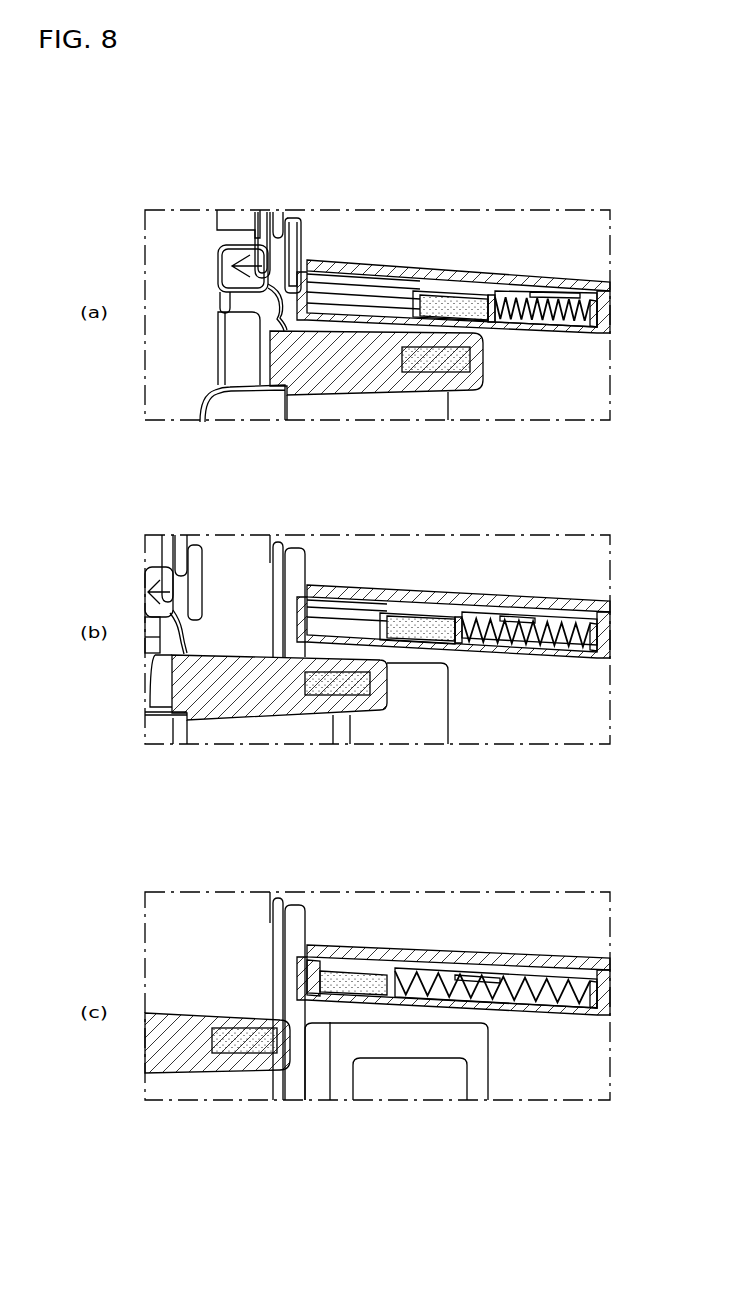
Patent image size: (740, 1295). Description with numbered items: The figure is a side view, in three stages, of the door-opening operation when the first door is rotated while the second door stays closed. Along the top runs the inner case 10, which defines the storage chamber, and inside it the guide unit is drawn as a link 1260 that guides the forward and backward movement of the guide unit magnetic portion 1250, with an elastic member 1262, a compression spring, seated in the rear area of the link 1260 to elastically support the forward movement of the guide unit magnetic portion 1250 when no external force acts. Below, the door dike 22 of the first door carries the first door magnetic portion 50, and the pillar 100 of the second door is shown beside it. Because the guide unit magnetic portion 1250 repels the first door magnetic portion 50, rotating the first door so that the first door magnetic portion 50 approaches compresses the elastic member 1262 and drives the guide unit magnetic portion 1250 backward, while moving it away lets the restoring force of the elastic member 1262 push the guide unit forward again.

The inner case 10 is at (605, 311).
The door dike 22 is at (320, 377).
The first door magnetic portion 50 is at (430, 362).
The pillar 100 is at (390, 405).
The guide unit magnetic portion 1250 is at (452, 296).
The link 1260 is at (357, 298).
The elastic member 1262 is at (513, 296).